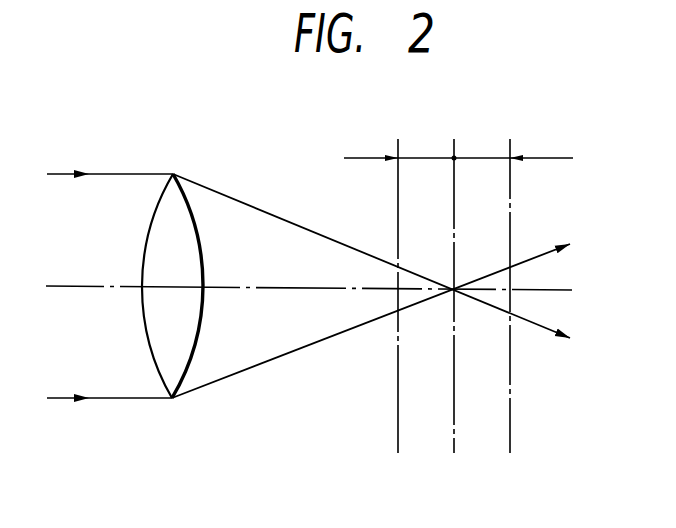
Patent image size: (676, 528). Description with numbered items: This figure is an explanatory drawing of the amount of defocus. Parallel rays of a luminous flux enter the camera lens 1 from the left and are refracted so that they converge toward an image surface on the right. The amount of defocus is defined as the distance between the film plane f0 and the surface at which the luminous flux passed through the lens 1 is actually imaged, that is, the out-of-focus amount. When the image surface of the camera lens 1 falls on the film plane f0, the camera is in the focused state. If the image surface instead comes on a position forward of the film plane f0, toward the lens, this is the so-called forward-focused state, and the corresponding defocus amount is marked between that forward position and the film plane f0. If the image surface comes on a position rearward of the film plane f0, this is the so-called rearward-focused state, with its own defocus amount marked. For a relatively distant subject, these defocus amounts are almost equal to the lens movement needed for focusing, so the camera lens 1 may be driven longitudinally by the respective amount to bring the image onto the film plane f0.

The camera lens 1 is at (151, 221).
The film plane f0 is at (456, 281).